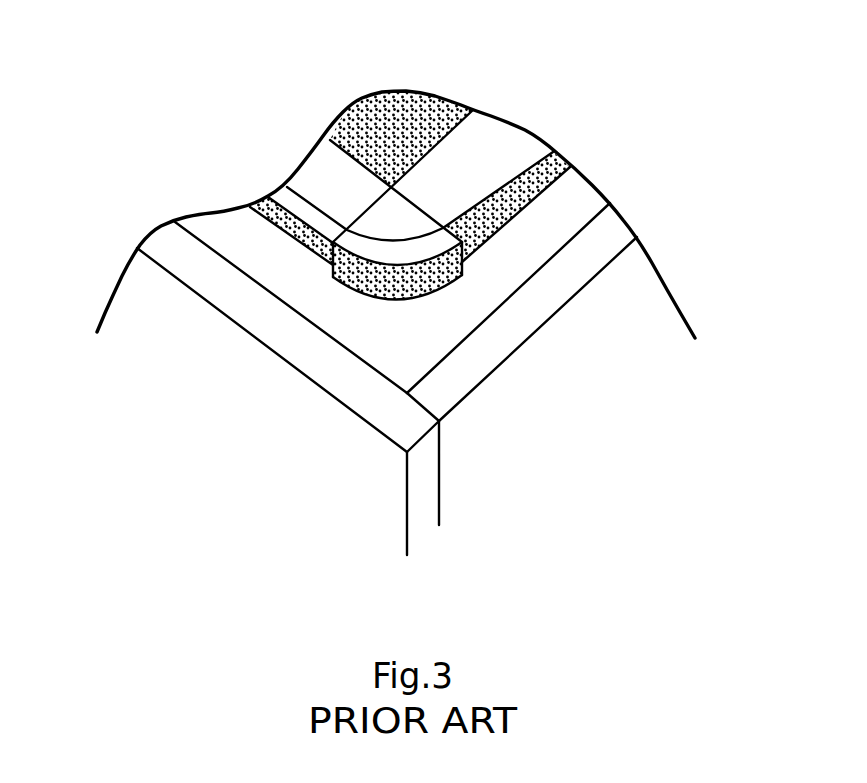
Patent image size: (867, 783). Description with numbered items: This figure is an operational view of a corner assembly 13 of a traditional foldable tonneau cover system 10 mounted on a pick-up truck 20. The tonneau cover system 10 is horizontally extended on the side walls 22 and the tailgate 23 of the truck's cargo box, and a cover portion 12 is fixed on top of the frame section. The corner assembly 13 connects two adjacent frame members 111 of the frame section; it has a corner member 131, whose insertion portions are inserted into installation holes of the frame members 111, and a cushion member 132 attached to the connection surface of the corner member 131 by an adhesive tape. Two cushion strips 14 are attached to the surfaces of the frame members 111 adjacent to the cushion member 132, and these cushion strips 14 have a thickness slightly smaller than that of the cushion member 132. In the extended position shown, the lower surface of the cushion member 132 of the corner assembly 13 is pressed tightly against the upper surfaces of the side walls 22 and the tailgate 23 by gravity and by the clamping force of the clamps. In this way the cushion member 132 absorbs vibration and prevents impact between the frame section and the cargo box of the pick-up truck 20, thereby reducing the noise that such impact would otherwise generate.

The tonneau cover system 10 is at (330, 106).
The cover portion 12 is at (405, 105).
The frame member 111 is at (308, 182).
The cushion strip 14 is at (560, 157).
The corner assembly 13 is at (277, 465).
The corner member 131 is at (372, 247).
The cushion member 132 is at (397, 287).
The pick-up truck 20 is at (518, 395).
The side wall 22 is at (492, 364).
The tailgate 23 is at (278, 330).